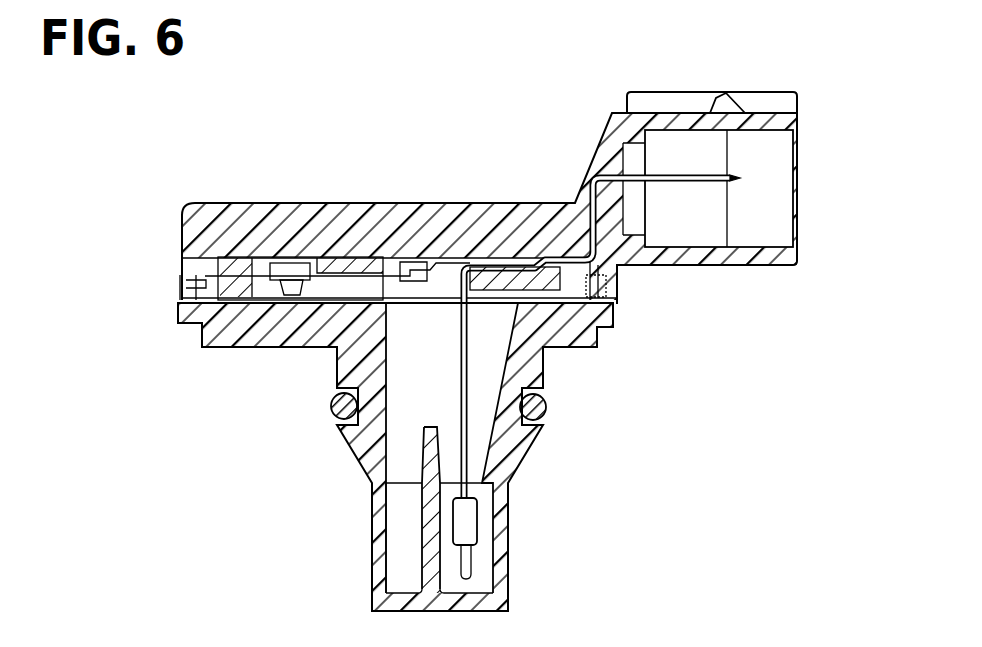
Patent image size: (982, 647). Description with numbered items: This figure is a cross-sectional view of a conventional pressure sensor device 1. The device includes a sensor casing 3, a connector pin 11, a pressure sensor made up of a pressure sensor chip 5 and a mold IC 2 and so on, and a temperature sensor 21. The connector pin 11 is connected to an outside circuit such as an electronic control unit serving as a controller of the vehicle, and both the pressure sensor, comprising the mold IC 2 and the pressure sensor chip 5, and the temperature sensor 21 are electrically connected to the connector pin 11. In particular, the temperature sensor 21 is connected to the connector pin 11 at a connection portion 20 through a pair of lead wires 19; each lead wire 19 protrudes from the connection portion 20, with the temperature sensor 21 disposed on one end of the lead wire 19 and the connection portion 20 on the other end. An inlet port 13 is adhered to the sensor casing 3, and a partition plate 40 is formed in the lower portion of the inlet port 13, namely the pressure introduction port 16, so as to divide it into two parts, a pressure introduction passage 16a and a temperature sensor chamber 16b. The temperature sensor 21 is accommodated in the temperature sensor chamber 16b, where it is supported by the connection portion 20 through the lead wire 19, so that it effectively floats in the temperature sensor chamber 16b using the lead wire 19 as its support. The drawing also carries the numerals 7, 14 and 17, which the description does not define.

The pressure sensor device 1 is at (770, 70).
The mold IC 2 is at (362, 250).
The sensor casing 3 is at (322, 225).
The pressure sensor chip 5 is at (300, 283).
The lead frame 7 is at (425, 257).
The connector pin 11 is at (574, 255).
The inlet port 13 is at (352, 368).
The housing base body 14 is at (495, 326).
The pressure introduction port 16 is at (428, 372).
The pressure introduction passage 16a is at (400, 519).
The temperature sensor chamber 16b is at (480, 583).
The sensing element 17 is at (465, 516).
The lead wire 19 is at (540, 372).
The connection portion 20 is at (512, 258).
The temperature sensor 21 is at (478, 531).
The partition plate 40 is at (432, 557).